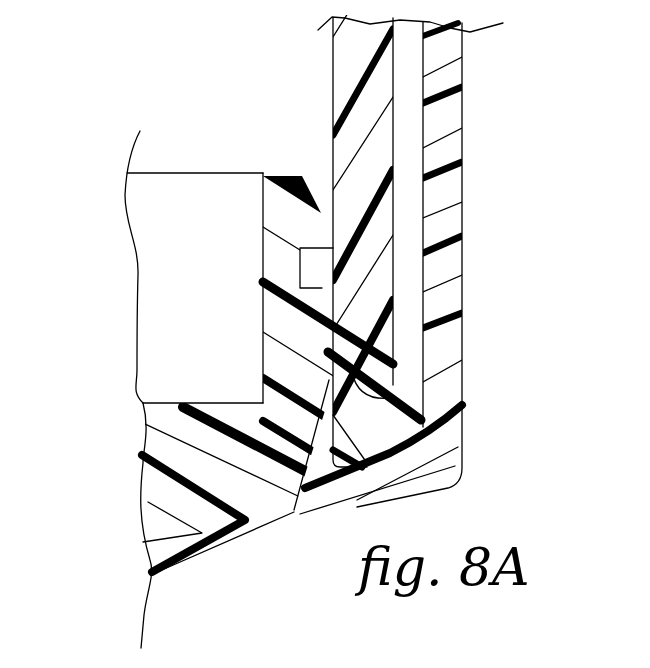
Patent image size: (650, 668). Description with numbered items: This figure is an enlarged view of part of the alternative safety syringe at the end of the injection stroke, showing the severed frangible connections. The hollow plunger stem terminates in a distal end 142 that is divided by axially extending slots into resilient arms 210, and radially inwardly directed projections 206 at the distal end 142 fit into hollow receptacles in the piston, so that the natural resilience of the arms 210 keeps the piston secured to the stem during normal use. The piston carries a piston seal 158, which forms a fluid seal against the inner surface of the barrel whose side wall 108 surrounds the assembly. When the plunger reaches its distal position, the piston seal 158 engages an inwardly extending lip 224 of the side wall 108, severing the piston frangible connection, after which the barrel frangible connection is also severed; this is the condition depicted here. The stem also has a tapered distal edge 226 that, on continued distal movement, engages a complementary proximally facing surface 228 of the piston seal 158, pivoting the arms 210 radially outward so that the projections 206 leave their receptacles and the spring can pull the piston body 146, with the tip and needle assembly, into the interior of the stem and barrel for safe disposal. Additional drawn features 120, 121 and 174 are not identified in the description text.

The piston body 146 is at (217, 173).
The arms 210 is at (367, 93).
The distal end of stem 142 is at (397, 137).
The side wall 108 is at (463, 178).
The radially inwardly directed projections 206 is at (318, 262).
The proximally facing surface 228 is at (362, 345).
The tapered distal edge 226 is at (392, 390).
The piston seal 158 is at (383, 421).
The flange 174 is at (350, 479).
The inwardly extending lip 224 is at (343, 488).
The lower seal portion 120 is at (293, 512).
The seal element 121 is at (300, 473).